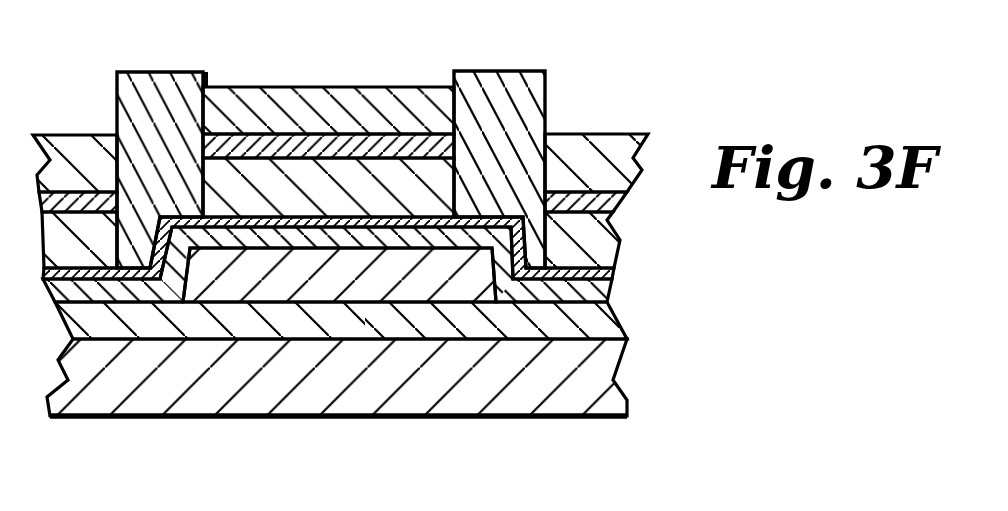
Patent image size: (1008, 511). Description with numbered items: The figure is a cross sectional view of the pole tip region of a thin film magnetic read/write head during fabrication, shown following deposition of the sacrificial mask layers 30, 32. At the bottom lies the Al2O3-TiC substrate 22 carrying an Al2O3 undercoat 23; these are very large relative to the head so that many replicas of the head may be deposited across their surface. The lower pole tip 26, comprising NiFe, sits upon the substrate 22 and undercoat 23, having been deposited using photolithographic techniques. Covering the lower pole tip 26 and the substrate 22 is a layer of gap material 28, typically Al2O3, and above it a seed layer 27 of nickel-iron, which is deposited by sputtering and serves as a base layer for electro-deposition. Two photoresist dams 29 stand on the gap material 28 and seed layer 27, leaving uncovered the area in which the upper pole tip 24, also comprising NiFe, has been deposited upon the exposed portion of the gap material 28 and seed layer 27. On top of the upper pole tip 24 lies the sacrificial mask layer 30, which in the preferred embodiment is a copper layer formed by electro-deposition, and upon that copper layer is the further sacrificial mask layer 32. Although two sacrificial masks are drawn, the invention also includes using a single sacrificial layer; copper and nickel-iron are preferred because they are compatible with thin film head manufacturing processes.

The substrate 22 is at (583, 368).
The undercoat 23 is at (462, 320).
The upper pole tip 24 is at (237, 172).
The lower pole tip 26 is at (230, 287).
The seed layer 27 is at (590, 264).
The gap material 28 is at (588, 290).
The photoresist dams 29 is at (137, 90).
The sacrificial mask layer 30 is at (330, 147).
The sacrificial mask layer 32 is at (410, 103).